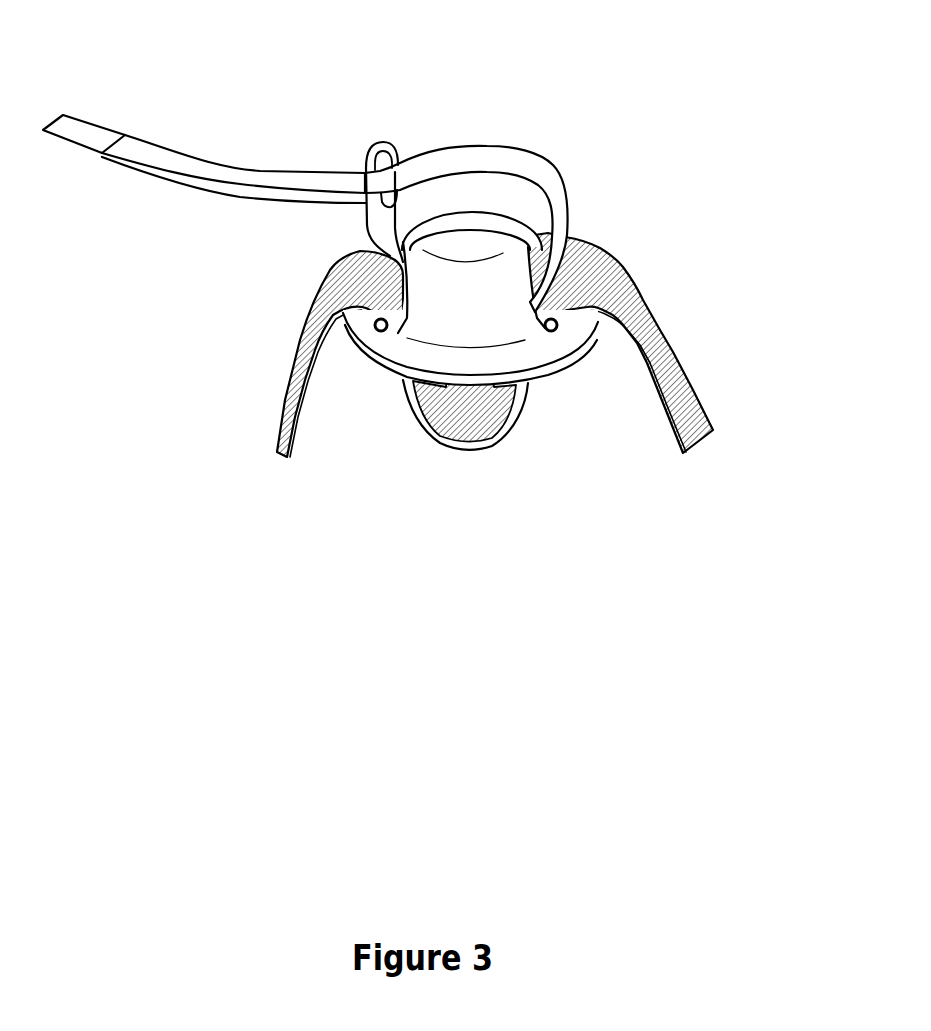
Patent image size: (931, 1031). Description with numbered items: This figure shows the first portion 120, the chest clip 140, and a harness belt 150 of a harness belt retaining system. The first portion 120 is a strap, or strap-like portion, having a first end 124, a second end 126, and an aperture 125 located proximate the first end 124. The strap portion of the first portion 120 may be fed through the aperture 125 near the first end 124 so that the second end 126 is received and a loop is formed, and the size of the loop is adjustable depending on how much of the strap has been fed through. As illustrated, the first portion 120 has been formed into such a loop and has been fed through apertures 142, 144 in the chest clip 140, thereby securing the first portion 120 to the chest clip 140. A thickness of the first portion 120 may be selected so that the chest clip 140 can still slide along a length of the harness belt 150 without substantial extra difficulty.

The first portion 120 is at (535, 158).
The first end 124 is at (382, 142).
The aperture 125 is at (388, 172).
The second end 126 is at (87, 133).
The chest clip 140 is at (493, 378).
The aperture 142 is at (380, 330).
The aperture 144 is at (552, 331).
The harness belt 150 is at (645, 332).